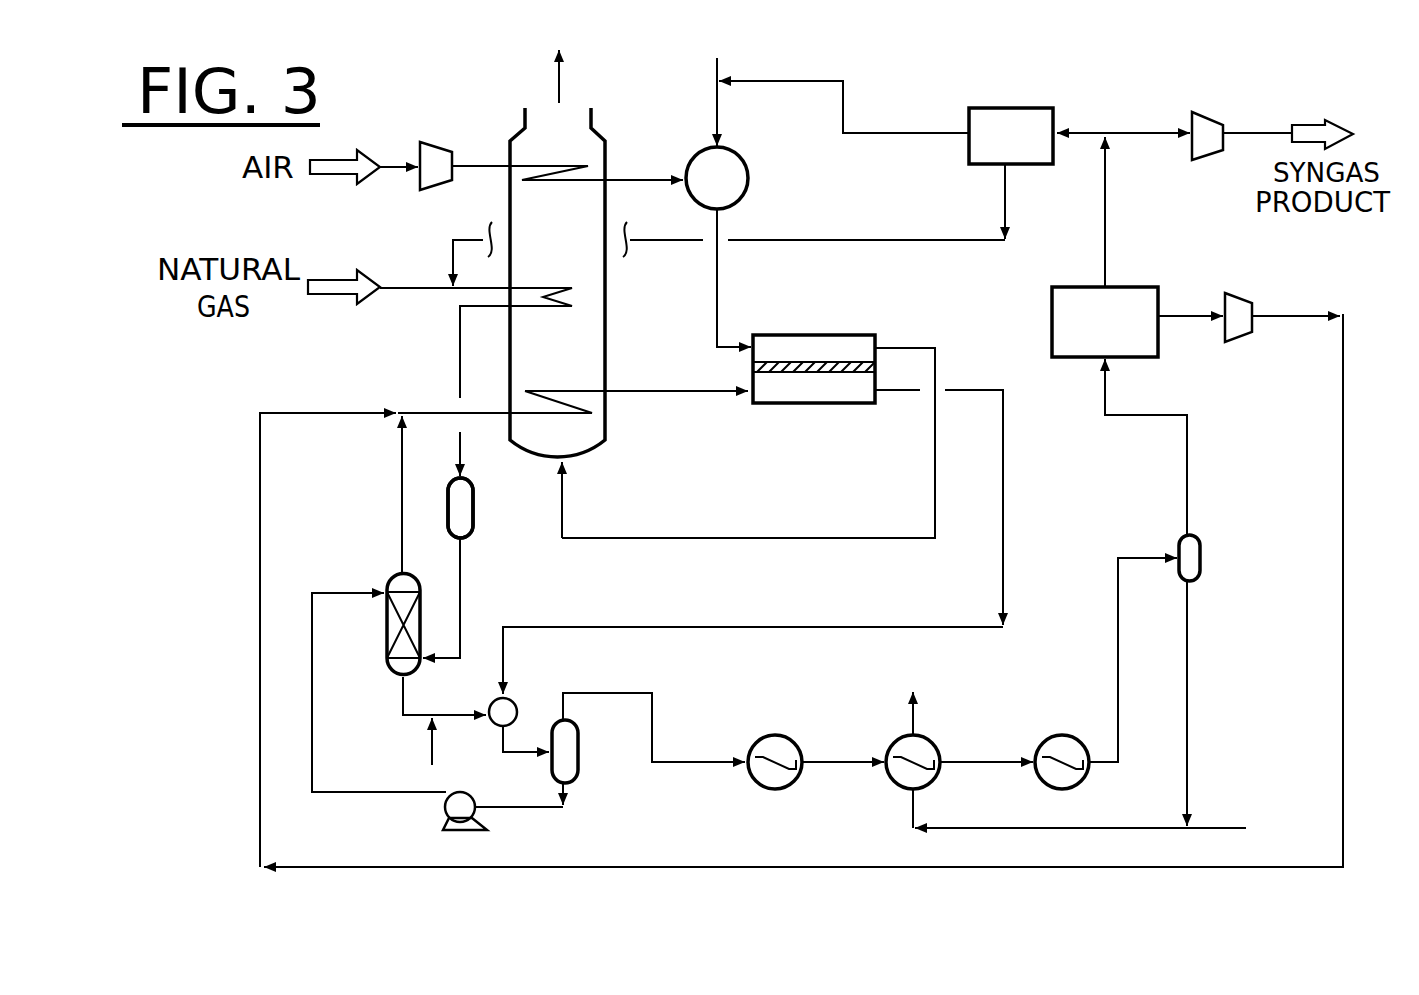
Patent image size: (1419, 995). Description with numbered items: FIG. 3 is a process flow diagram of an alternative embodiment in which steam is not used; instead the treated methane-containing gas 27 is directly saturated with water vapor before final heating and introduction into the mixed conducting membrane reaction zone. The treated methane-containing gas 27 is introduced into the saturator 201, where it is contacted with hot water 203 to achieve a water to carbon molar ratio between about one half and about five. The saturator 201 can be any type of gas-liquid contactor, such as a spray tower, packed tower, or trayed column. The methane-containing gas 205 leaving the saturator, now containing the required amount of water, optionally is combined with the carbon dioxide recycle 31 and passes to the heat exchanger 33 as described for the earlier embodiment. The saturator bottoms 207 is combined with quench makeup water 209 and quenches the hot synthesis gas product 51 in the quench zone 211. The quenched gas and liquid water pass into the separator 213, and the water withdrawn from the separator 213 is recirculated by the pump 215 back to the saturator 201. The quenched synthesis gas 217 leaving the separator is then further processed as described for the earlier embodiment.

The treated methane-containing gas 27 is at (463, 565).
The carbon dioxide recycle 31 is at (290, 412).
The heat exchanger 33 is at (563, 388).
The hot synthesis gas product 51 is at (668, 625).
The saturator 201 is at (395, 575).
The hot water 203 is at (342, 657).
The methane-containing gas 205 is at (401, 488).
The saturator bottoms 207 is at (402, 703).
The quench makeup water 209 is at (431, 756).
The quench zone 211 is at (516, 703).
The separator 213 is at (579, 750).
The pump 215 is at (446, 812).
The quenched synthesis gas 217 is at (652, 712).